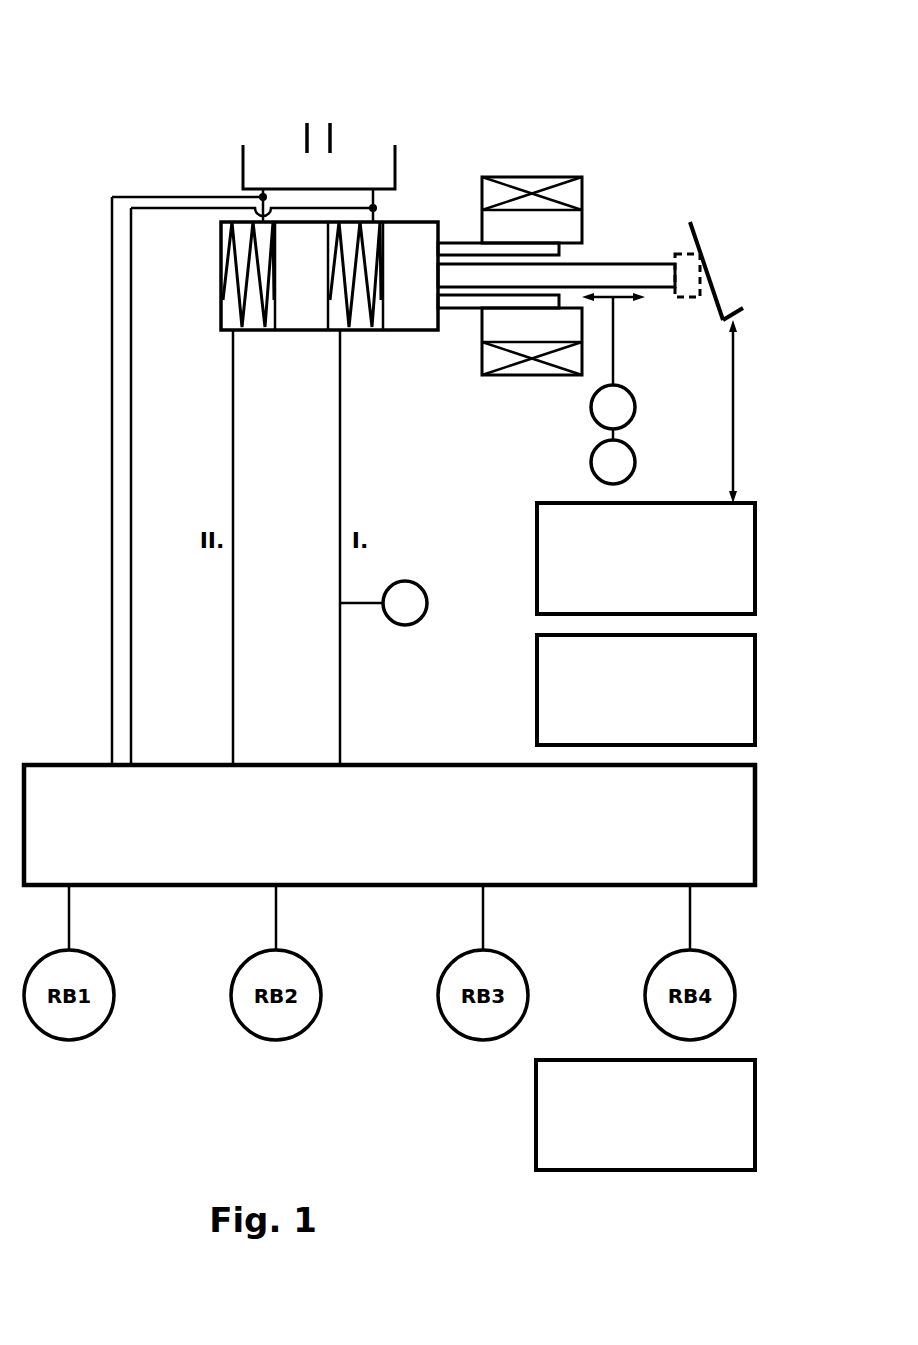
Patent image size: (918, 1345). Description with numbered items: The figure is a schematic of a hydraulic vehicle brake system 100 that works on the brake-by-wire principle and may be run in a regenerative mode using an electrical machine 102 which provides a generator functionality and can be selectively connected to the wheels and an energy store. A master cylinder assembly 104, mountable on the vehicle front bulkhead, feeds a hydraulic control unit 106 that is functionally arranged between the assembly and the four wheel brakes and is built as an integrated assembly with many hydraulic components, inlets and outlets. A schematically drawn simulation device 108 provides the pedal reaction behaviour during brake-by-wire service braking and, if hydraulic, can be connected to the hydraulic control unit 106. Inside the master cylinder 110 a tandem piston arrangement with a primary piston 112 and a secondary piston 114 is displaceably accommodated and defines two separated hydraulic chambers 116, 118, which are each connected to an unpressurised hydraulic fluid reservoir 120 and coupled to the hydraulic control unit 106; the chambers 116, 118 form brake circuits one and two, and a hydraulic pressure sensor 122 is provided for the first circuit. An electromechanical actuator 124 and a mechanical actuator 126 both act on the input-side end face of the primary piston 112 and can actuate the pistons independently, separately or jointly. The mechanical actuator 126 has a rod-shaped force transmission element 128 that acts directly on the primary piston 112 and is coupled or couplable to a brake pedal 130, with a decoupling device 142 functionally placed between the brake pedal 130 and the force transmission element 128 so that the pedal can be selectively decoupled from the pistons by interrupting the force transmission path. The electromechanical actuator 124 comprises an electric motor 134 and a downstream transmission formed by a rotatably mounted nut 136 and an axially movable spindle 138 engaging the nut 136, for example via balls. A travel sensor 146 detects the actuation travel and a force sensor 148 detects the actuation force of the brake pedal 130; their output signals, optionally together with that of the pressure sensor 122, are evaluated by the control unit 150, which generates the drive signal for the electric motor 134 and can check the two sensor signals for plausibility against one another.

The hydraulic vehicle brake system 100 is at (75, 42).
The electrical machine 102 is at (535, 1103).
The master cylinder assembly 104 is at (416, 100).
The hydraulic control unit 106 is at (213, 797).
The simulation device 108 is at (535, 562).
The master cylinder 110 is at (360, 372).
The primary piston 112 is at (425, 286).
The secondary piston 114 is at (315, 286).
The hydraulic chamber 116 is at (340, 318).
The hydraulic chamber 118 is at (232, 318).
The hydraulic fluid reservoir 120 is at (287, 167).
The hydraulic pressure sensor 122 is at (417, 592).
The electromechanical actuator 124 is at (507, 154).
The mechanical actuator 126 is at (692, 181).
The force transmission element 128 is at (613, 275).
The brake pedal 130 is at (712, 282).
The electric motor 134 is at (525, 367).
The nut 136 is at (570, 232).
The spindle 138 is at (460, 310).
The decoupling device 142 is at (688, 282).
The travel sensor 146 is at (635, 415).
The force sensor 148 is at (630, 458).
The control unit 150 is at (535, 680).